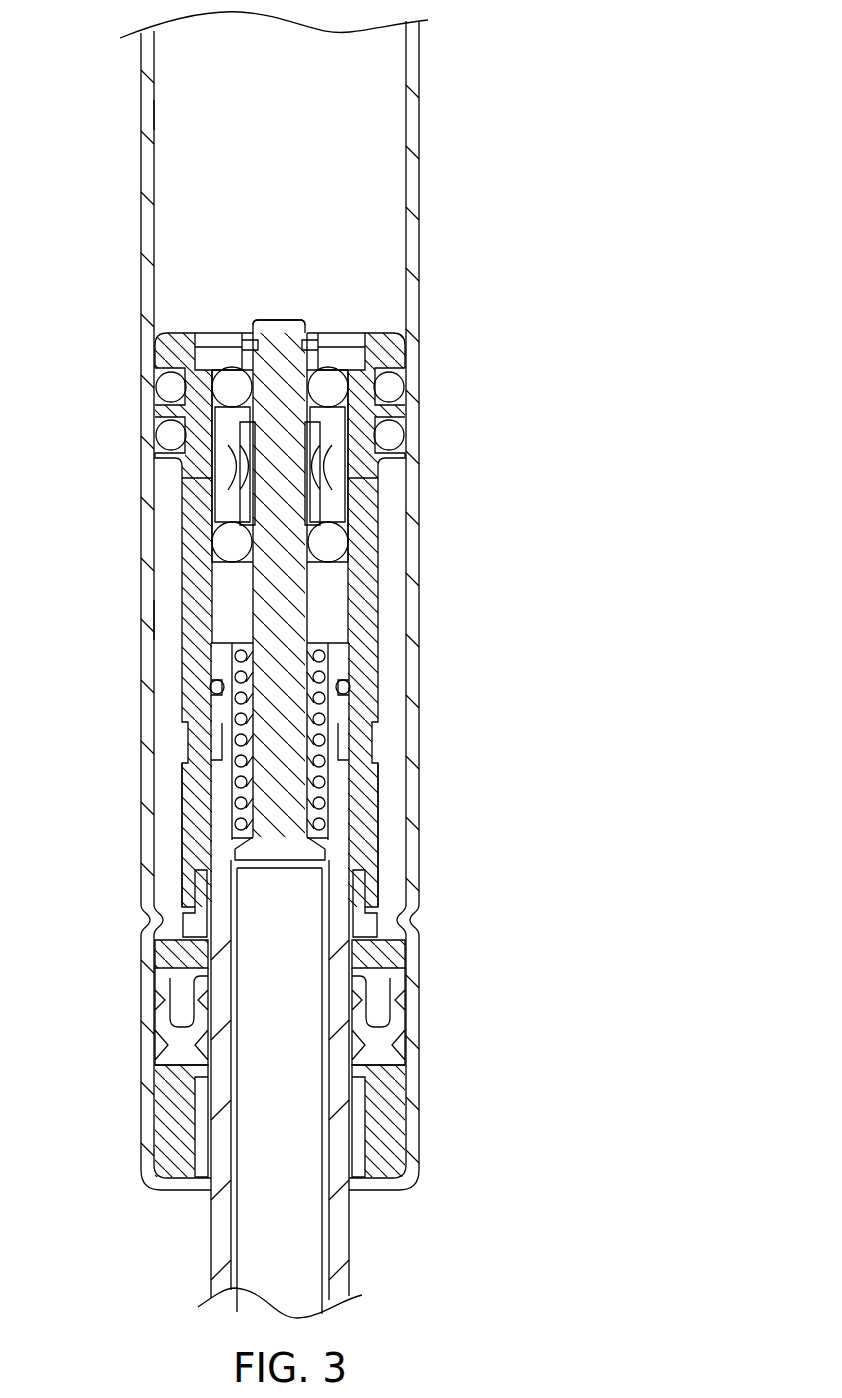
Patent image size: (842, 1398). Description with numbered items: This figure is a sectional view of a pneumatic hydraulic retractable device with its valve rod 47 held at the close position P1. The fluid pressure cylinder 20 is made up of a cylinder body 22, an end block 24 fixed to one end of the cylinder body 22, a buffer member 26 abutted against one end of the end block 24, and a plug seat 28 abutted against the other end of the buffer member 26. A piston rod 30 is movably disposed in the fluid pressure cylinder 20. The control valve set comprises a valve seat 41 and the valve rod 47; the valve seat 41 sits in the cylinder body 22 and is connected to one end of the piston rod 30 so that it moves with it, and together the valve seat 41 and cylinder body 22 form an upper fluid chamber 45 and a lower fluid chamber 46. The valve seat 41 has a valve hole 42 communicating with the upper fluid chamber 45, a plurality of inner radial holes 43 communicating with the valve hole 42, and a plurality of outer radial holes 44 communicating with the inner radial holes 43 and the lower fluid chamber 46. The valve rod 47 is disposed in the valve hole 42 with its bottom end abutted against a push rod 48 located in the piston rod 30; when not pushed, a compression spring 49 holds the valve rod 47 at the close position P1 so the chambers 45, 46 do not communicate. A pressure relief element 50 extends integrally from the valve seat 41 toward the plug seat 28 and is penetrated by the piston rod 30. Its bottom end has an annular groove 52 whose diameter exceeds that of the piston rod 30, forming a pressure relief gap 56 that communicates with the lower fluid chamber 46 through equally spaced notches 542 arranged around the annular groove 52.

The fluid pressure cylinder 20 is at (420, 131).
The cylinder body 22 is at (410, 432).
The end block 24 is at (388, 1127).
The buffer member 26 is at (383, 1044).
The plug seat 28 is at (382, 954).
The piston rod 30 is at (343, 1262).
The valve seat 41 is at (198, 568).
The valve hole 42 is at (240, 353).
The inner radial holes 43 is at (237, 465).
The outer radial holes 44 is at (197, 480).
The upper fluid chamber 45 is at (218, 120).
The lower fluid chamber 46 is at (163, 614).
The valve rod 47 is at (290, 345).
The push rod 48 is at (280, 1110).
The compression spring 49 is at (330, 773).
The pressure relief element 50 is at (197, 786).
The annular groove 52 is at (362, 889).
The pressure relief gap 56 is at (203, 881).
The notches 542 is at (192, 920).
The close position P1 is at (305, 318).